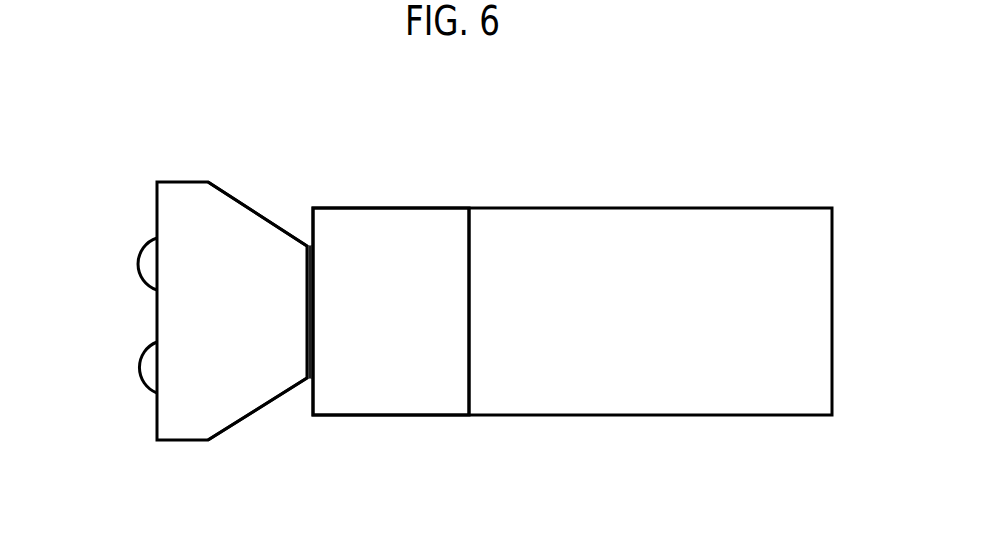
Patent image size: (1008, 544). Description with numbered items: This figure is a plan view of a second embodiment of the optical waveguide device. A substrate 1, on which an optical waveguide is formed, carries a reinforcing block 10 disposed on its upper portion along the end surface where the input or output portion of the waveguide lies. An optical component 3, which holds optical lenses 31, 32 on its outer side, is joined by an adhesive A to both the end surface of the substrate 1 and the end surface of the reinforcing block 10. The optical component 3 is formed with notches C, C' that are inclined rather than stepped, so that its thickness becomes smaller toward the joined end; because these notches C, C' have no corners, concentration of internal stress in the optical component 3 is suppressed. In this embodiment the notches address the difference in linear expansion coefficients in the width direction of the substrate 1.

The substrate 1 is at (600, 233).
The reinforcing block 10 is at (380, 233).
The optical component 3 is at (220, 415).
The optical lens 31 is at (138, 262).
The optical lens 32 is at (138, 368).
The adhesive A is at (315, 362).
The notch C is at (270, 175).
The notch C' is at (269, 455).